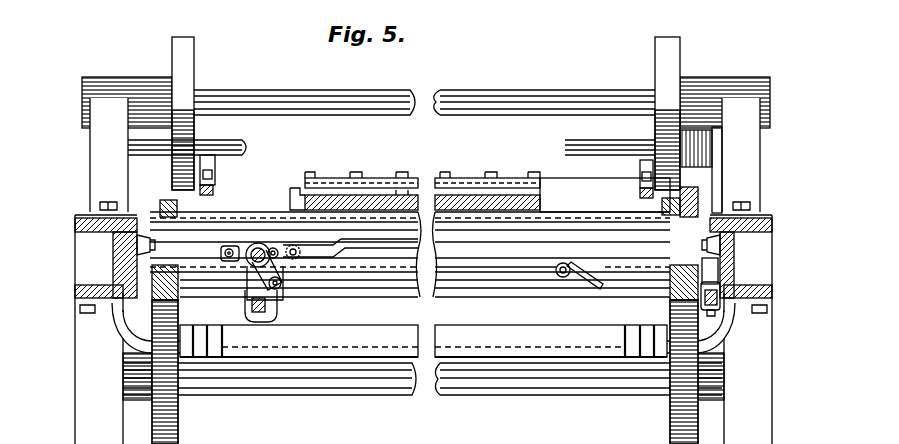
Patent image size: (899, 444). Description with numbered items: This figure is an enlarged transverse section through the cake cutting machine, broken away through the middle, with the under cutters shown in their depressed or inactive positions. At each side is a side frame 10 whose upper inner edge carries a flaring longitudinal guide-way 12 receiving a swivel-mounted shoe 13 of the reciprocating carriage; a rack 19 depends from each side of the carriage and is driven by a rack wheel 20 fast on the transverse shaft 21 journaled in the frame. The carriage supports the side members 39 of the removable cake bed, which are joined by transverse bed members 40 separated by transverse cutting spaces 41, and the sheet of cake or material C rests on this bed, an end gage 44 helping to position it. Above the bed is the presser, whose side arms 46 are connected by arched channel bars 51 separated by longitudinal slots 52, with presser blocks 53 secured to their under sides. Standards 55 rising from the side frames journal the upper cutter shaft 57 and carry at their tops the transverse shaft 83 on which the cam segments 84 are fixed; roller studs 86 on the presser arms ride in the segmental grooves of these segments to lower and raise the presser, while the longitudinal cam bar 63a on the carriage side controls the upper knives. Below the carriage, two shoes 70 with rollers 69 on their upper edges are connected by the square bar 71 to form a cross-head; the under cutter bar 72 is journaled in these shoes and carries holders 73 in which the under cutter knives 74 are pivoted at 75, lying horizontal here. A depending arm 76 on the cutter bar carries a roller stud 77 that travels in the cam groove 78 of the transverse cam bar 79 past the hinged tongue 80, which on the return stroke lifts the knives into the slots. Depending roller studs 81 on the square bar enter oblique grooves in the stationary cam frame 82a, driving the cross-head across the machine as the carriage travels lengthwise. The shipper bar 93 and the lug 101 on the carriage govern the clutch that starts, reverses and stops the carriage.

The side frame 10 is at (90, 370).
The longitudinal guide-way 12 is at (122, 243).
The shoe 13 is at (143, 217).
The rack 19 is at (153, 288).
The rack wheel 20 is at (178, 424).
The transverse shaft 21 is at (497, 380).
The side member of the cake bed 39 is at (169, 198).
The transverse bed member 40 is at (557, 212).
The transverse cutting space 41 is at (378, 205).
The end gage 44 is at (300, 243).
The side arm of the presser 46 is at (203, 197).
The channel bar 51 is at (360, 200).
The longitudinal slot 52 is at (400, 183).
The presser block 53 is at (323, 186).
The standard 55 is at (103, 88).
The upper cutter shaft 57 is at (220, 141).
The longitudinal cam bar 63a is at (698, 189).
The roller 69 is at (170, 294).
The shoe 70 is at (247, 245).
The square bar 71 is at (275, 325).
The under cutter bar 72 is at (250, 262).
The holder 73 is at (256, 259).
The under cutter knife 74 is at (288, 212).
The pivot 75 is at (271, 246).
The depending arm 76 is at (272, 268).
The roller stud 77 is at (281, 280).
The cam groove 78 is at (480, 283).
The transverse cam bar 79 is at (563, 280).
The hinged tongue 80 is at (598, 292).
The depending roller stud 81 is at (266, 313).
The stationary cam frame 82a is at (545, 350).
The transverse shaft 83 is at (263, 97).
The cam segment 84 is at (182, 64).
The roller stud 86 is at (214, 168).
The shipper bar 93 is at (722, 288).
The lug 101 is at (718, 262).
The sheet of cake or material C is at (507, 202).